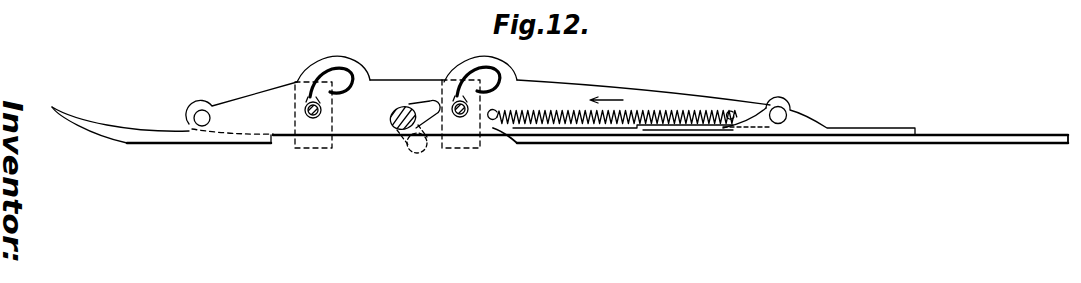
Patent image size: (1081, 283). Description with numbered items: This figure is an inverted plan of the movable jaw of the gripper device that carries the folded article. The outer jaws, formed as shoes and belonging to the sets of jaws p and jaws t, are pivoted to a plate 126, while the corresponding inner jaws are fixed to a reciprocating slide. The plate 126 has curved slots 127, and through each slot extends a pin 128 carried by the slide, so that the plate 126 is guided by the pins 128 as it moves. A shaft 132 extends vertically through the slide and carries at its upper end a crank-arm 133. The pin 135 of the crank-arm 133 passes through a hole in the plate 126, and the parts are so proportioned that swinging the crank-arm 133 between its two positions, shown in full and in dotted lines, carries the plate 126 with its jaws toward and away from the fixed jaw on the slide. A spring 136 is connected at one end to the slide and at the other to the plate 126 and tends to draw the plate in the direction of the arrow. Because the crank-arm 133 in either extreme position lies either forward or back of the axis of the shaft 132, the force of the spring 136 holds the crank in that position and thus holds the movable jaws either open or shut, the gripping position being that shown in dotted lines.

The plate 126 is at (627, 107).
The curved slots 127 is at (338, 70).
The pin 128 is at (313, 113).
The shaft 132 is at (392, 130).
The crank-arm 133 is at (428, 108).
The pin of the crank-arm 135 is at (431, 122).
The spring 136 is at (605, 125).
The jaws p is at (177, 137).
The jaws t is at (883, 138).